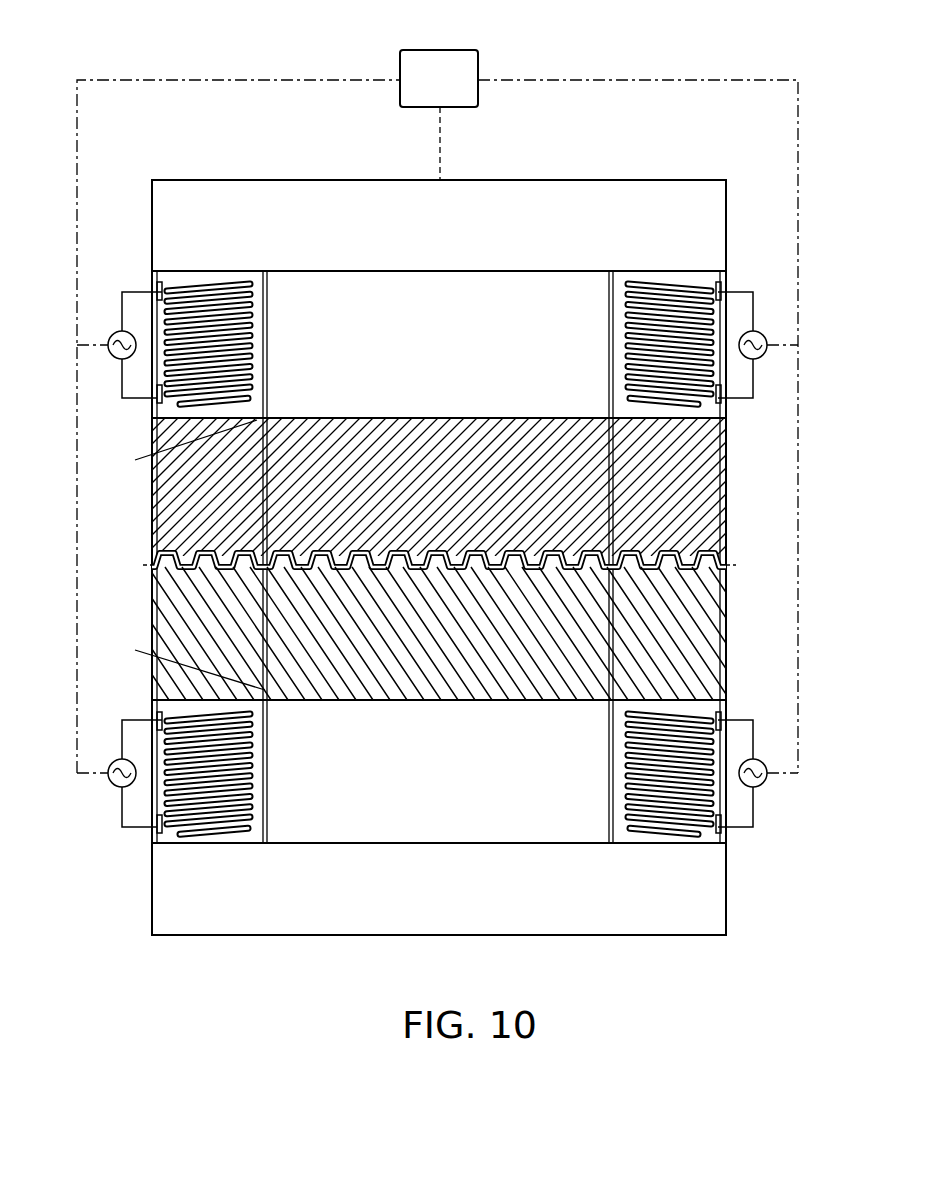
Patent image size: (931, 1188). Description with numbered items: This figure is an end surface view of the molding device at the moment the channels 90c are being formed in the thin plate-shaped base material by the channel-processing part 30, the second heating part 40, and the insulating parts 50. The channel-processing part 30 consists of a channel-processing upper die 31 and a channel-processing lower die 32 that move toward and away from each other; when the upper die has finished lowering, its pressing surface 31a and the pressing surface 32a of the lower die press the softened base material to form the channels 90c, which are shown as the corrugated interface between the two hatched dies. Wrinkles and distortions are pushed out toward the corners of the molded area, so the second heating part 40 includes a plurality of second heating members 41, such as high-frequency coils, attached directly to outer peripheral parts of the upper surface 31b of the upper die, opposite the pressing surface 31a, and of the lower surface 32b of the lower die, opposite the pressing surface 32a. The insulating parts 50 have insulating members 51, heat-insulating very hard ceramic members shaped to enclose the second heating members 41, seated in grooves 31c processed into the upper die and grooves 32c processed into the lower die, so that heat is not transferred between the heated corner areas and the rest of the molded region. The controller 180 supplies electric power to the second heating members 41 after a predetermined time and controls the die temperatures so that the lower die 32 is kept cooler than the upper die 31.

The controller 180 is at (443, 60).
The second heating part 40 is at (743, 220).
The second heating members 41 is at (668, 280).
The channel-processing part 30 is at (434, 563).
The channel-processing upper die 31 is at (434, 457).
The pressing surface 31a is at (390, 557).
The upper surface 31b is at (515, 418).
The grooves 31c is at (275, 440).
The channel-processing lower die 32 is at (430, 667).
The pressing surface 32a is at (403, 568).
The lower surface 32b is at (518, 700).
The grooves 32c is at (272, 645).
The channels 90c is at (147, 562).
The insulating parts 50 is at (129, 463).
The insulating members 51 is at (152, 500).